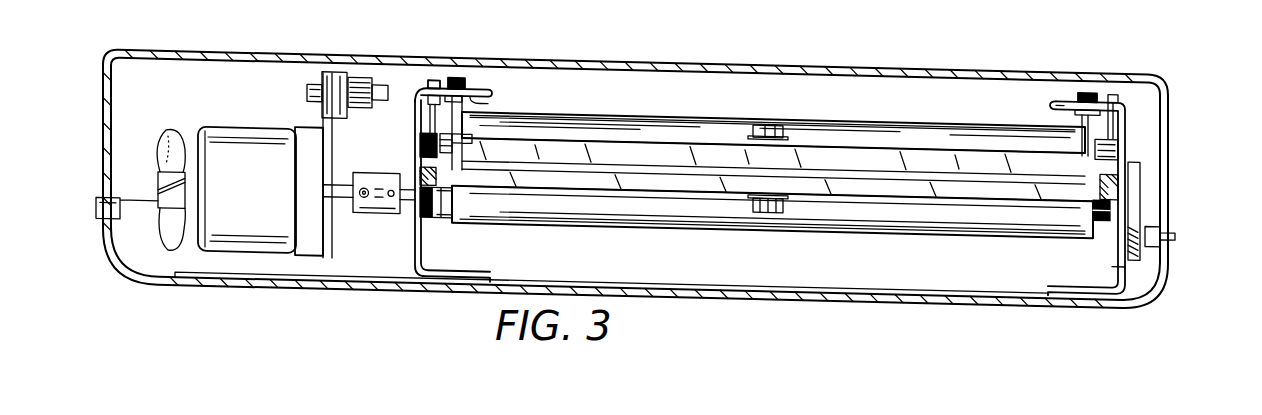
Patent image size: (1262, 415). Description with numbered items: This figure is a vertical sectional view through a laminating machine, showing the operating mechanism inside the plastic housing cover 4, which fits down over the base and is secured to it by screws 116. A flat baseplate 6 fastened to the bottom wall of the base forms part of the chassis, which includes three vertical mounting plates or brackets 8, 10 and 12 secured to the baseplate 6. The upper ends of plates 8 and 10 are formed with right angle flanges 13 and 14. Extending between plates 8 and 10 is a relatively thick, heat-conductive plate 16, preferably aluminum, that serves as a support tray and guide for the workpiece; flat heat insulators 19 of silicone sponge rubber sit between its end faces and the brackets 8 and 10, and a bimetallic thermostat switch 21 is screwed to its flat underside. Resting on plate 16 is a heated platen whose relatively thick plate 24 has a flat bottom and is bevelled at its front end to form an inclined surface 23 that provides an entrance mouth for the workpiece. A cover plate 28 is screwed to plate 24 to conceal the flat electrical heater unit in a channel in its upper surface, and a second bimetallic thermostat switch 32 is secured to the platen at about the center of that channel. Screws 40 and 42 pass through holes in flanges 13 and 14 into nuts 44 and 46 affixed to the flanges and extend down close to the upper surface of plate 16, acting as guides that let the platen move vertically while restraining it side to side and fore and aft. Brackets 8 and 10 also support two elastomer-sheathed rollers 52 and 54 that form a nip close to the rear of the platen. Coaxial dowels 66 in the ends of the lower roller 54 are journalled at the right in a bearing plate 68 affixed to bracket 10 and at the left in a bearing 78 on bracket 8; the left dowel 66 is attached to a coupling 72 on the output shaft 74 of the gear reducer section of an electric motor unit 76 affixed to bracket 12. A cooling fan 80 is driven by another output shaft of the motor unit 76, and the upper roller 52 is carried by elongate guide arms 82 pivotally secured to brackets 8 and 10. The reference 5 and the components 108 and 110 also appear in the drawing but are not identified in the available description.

The cover 4 is at (90, 116).
The section line 5 is at (525, 1).
The baseplate 6 is at (280, 268).
The mounting plate 8 is at (417, 243).
The mounting plate 10 is at (1122, 258).
The mounting plate 12 is at (327, 246).
The right angle flange 13 is at (478, 88).
The right angle flange 14 is at (1060, 101).
The plate 16 is at (596, 180).
The heat insulator 19 is at (427, 186).
The bimetallic thermostat switch 21 is at (768, 212).
The inclined surface 23 is at (632, 168).
The platen plate 24 is at (606, 153).
The cover plate 28 is at (695, 143).
The bimetallic thermostat switch 32 is at (768, 125).
The screw 40 is at (430, 108).
The screw 42 is at (1093, 127).
The nut 44 is at (468, 101).
The nut 46 is at (1055, 110).
The upper roller 52 is at (918, 115).
The lower roller 54 is at (928, 238).
The dowel 66 is at (438, 212).
The bearing plate 68 is at (1137, 205).
The coupling 72 is at (365, 180).
The output shaft 74 is at (340, 200).
The electric motor unit 76 is at (243, 148).
The bearing 78 is at (430, 218).
The cooling fan 80 is at (178, 136).
The guide arm 82 is at (425, 140).
The knob 108 is at (365, 78).
The switch 110 is at (338, 80).
The screw 116 is at (95, 207).